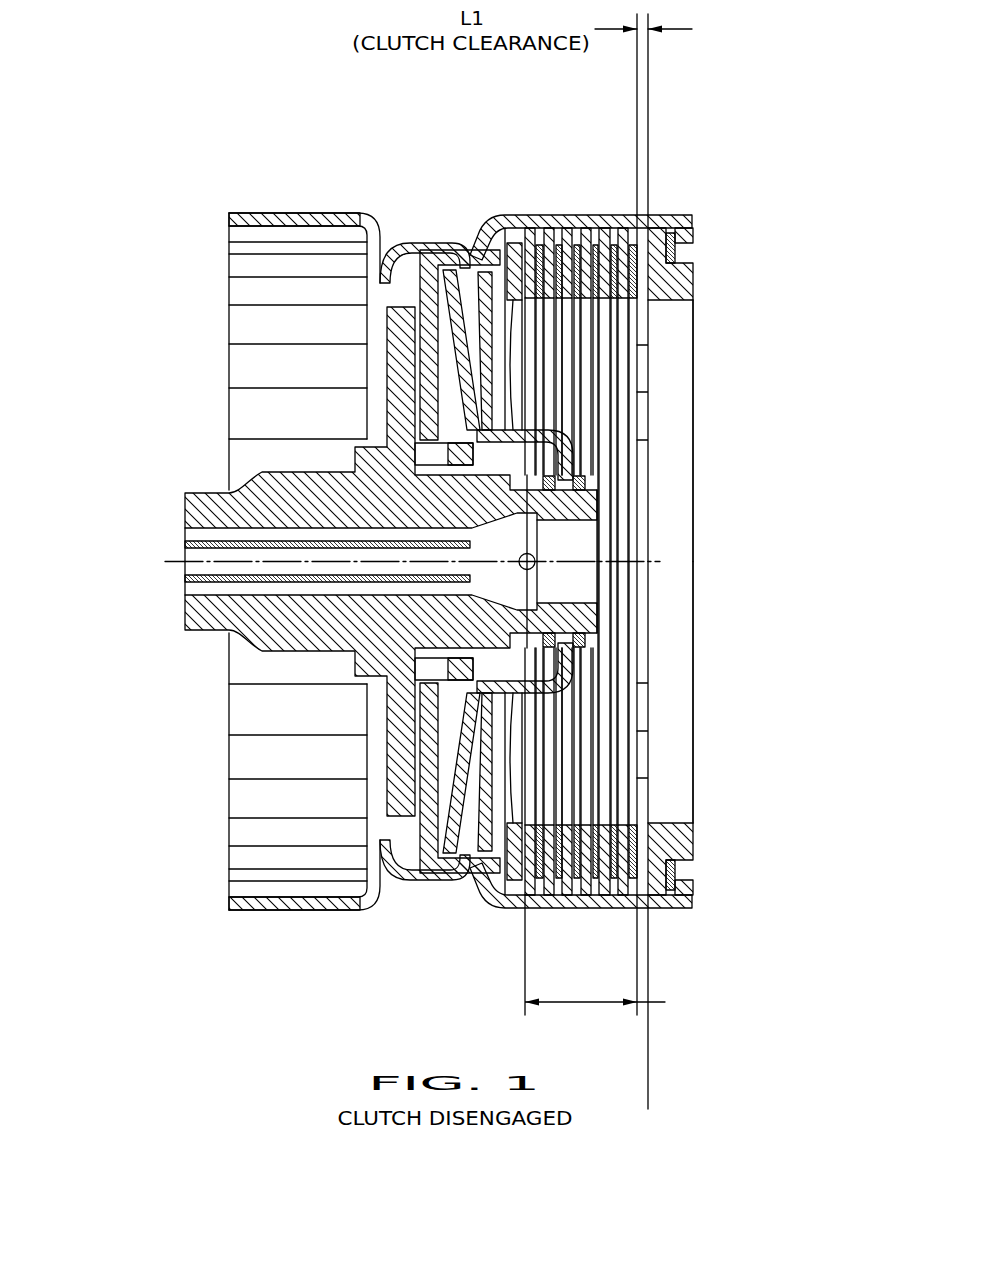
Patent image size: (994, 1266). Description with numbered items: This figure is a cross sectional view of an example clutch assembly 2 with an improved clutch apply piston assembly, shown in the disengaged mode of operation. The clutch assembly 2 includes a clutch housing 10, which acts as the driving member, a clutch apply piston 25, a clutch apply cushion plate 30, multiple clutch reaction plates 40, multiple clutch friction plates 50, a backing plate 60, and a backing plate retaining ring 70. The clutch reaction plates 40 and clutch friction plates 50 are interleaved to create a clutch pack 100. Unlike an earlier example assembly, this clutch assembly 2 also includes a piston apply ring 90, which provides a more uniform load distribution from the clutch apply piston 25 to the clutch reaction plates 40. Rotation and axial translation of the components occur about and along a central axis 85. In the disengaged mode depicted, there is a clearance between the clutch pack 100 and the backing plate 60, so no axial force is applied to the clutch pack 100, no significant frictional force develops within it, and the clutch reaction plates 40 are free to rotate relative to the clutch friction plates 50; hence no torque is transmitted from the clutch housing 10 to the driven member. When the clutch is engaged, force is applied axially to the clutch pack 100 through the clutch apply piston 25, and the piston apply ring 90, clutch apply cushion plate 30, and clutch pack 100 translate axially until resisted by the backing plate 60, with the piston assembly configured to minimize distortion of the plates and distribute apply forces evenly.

The clutch assembly 2 is at (738, 512).
The clutch housing 10 is at (408, 228).
The clutch apply piston 25 is at (450, 242).
The clutch apply cushion plate 30 is at (489, 233).
The clutch reaction plates 40 is at (512, 232).
The clutch friction plates 50 is at (612, 233).
The backing plate 60 is at (660, 220).
The backing plate retaining ring 70 is at (682, 223).
The central axis 85 is at (173, 560).
The piston apply ring 90 is at (482, 228).
The clutch pack 100 is at (727, 1028).